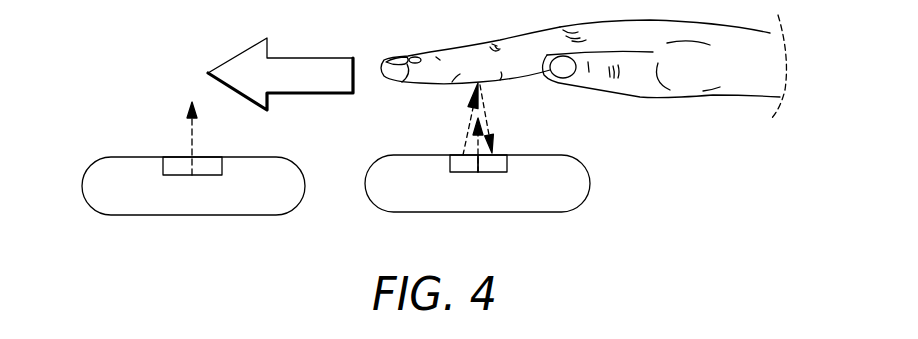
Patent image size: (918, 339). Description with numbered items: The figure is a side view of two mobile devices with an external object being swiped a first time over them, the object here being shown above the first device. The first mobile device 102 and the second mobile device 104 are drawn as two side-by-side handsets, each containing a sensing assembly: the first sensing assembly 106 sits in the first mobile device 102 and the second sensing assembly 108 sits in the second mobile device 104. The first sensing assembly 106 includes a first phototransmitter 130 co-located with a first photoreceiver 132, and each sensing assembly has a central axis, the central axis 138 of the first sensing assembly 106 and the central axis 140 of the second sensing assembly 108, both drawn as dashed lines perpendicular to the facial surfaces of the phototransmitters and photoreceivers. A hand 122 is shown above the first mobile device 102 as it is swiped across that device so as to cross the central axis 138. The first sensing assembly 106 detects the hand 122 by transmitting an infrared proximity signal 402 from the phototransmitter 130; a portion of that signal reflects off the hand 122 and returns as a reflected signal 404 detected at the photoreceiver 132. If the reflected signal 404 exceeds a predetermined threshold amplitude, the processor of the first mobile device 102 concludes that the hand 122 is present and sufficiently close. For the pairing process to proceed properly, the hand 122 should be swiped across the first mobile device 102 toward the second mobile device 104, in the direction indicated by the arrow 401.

The first mobile device 102 is at (591, 182).
The second mobile device 104 is at (84, 203).
The first sensing assembly 106 is at (478, 182).
The second sensing assembly 108 is at (187, 181).
The hand 122 is at (722, 97).
The first phototransmitter 130 is at (462, 173).
The first photoreceiver 132 is at (493, 173).
The central axis 138 is at (475, 146).
The central axis 140 is at (189, 137).
The arrow 401 is at (318, 85).
The infrared proximity signal 402 is at (468, 112).
The reflected signal 404 is at (487, 119).